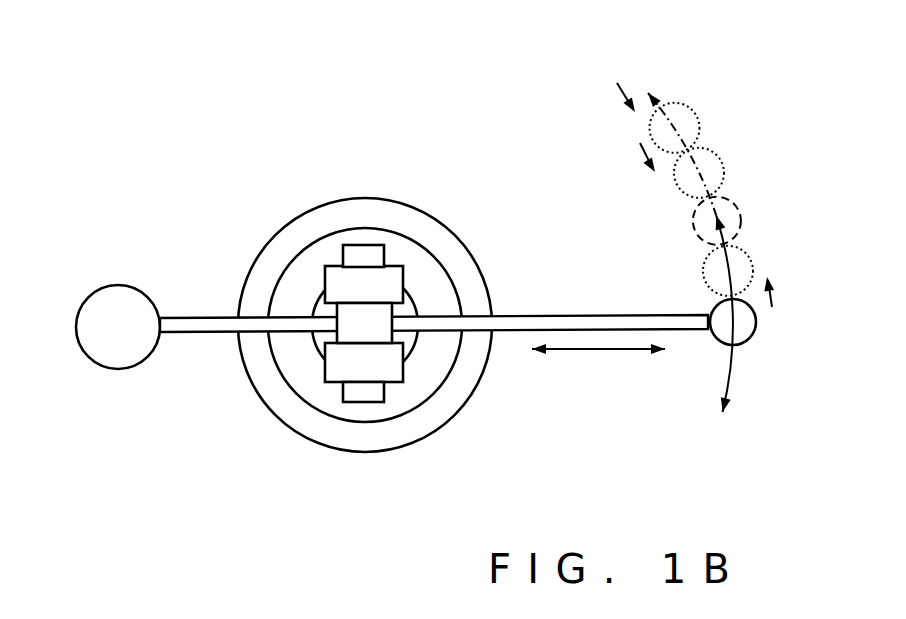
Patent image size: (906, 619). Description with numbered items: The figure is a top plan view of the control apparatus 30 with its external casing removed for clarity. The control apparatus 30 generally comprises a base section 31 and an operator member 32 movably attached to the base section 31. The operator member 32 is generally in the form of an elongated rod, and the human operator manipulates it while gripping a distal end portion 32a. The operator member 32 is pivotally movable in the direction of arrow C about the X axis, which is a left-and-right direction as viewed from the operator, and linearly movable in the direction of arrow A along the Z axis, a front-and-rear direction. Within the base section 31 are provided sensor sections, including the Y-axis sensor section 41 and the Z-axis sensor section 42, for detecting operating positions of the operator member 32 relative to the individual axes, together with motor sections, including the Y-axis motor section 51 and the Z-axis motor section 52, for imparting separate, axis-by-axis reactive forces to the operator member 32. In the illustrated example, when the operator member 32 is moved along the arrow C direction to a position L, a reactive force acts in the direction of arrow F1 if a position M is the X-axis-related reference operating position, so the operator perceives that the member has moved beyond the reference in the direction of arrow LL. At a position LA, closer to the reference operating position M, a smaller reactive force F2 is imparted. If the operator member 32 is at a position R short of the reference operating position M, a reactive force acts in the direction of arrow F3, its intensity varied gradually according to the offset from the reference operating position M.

The control apparatus 30 is at (296, 182).
The base section 31 is at (303, 286).
The operator member 32 is at (200, 313).
The distal end portion 32a is at (750, 343).
The Y-axis sensor section 41 is at (375, 245).
The Z-axis sensor section 42 is at (348, 400).
The Y-axis motor section 51 is at (388, 275).
The Z-axis motor section 52 is at (333, 382).
The arrow A direction A is at (598, 363).
The arrow C direction C is at (690, 271).
The arrow LL direction LL is at (643, 84).
The position L is at (687, 103).
The position LA is at (712, 147).
The reference operating position M is at (728, 193).
The position R is at (748, 247).
The reactive force F1 is at (611, 97).
The reactive force F2 is at (630, 155).
The reactive force F3 is at (787, 296).